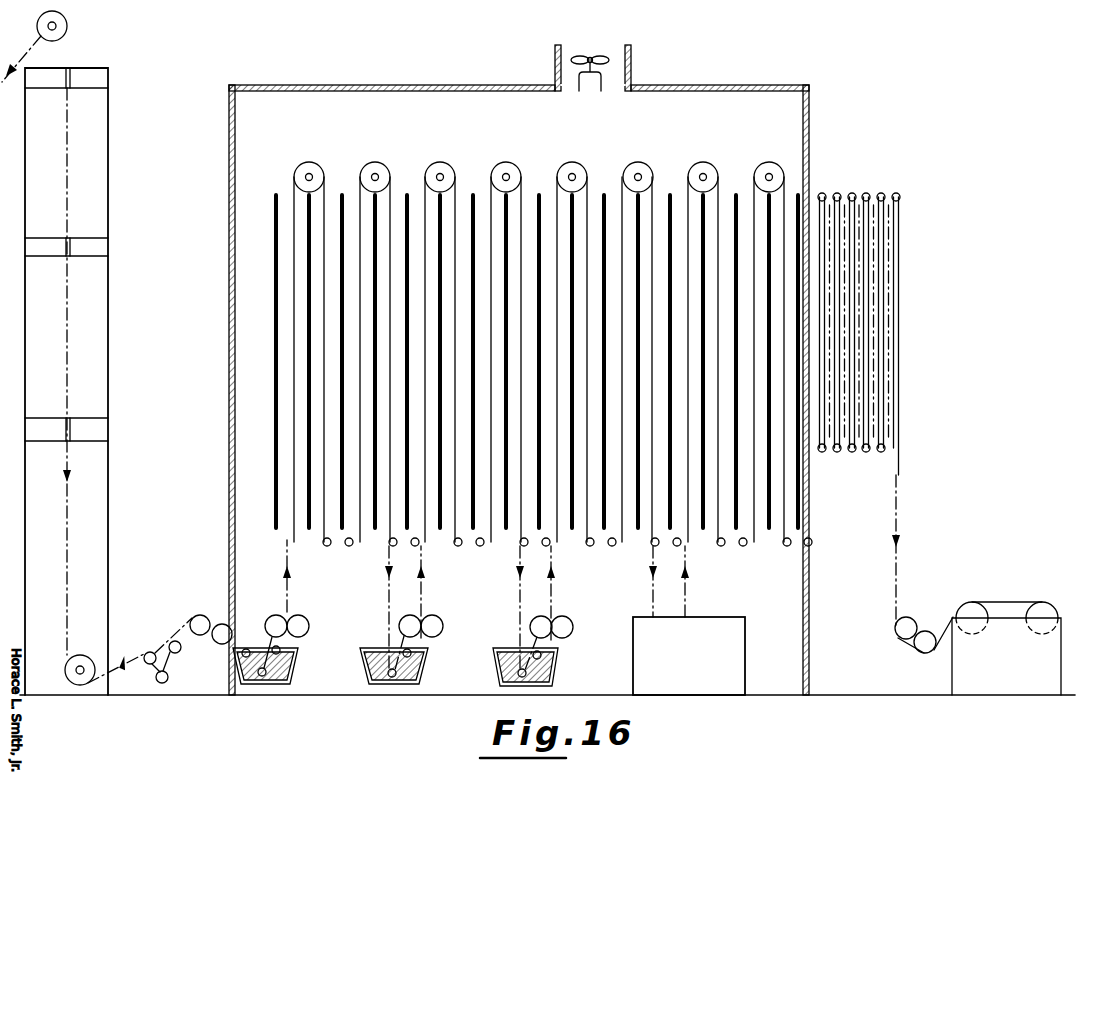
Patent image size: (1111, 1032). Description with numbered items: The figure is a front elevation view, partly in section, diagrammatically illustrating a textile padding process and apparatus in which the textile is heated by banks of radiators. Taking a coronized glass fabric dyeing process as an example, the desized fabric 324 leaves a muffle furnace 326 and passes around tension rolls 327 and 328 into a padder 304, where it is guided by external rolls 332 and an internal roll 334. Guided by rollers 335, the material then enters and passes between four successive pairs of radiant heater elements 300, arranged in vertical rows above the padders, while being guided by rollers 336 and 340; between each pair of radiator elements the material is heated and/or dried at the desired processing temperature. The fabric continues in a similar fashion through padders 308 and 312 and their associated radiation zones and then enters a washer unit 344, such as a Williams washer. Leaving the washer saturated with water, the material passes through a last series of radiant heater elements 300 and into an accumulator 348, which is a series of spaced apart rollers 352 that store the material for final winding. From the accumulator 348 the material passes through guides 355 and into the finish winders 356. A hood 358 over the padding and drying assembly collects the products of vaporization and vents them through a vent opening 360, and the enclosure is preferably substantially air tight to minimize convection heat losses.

The radiant heater elements 300 is at (376, 206).
The padder 304 is at (294, 673).
The padder 308 is at (425, 672).
The padder 312 is at (556, 680).
The desized fabric 324 is at (120, 664).
The muffle furnace 326 is at (114, 303).
The tension rolls 327 is at (162, 684).
The tension rolls 328 is at (204, 621).
The external rolls 332 is at (247, 648).
The internal roll 334 is at (260, 686).
The rollers 335 is at (285, 614).
The rollers 336 is at (317, 168).
The rollers 340 is at (349, 547).
The washer unit 344 is at (708, 669).
The accumulator 348 is at (859, 299).
The spaced apart rollers 352 is at (896, 193).
The guides 355 is at (912, 624).
The finish winders 356 is at (978, 613).
The hood 358 is at (492, 74).
The vent opening 360 is at (632, 72).